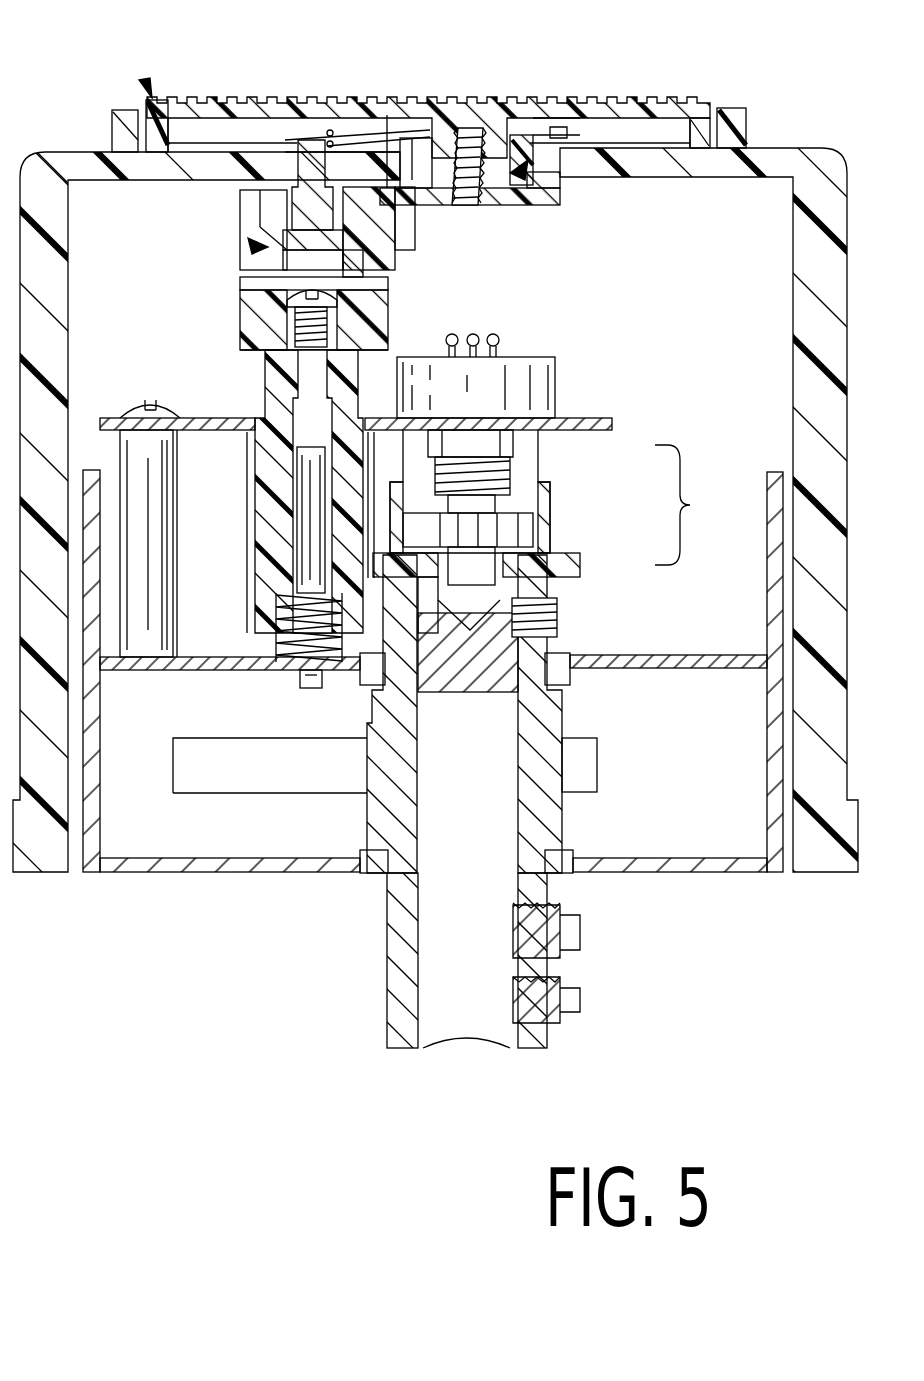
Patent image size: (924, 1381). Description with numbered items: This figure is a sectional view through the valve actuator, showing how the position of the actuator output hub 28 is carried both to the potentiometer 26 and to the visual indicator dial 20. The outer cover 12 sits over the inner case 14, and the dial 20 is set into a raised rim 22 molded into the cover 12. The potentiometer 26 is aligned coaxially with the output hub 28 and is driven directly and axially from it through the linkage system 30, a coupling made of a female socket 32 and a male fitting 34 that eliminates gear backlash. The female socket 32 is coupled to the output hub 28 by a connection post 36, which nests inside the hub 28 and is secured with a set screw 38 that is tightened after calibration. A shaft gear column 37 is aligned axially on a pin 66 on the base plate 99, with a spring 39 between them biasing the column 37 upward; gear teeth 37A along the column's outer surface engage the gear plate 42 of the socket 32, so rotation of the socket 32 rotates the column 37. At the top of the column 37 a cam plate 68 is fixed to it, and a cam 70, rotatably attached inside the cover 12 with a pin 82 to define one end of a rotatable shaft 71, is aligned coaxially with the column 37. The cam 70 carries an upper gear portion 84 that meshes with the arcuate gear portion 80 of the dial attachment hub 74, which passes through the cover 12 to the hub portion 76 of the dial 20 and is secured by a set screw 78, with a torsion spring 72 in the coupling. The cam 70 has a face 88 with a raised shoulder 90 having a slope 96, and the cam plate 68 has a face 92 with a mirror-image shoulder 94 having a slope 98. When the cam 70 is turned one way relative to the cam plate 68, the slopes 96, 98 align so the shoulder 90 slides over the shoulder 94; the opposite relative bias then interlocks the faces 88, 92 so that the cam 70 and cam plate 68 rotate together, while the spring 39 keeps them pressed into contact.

The outer cover 12 is at (808, 382).
The inner case 14 is at (116, 873).
The visual indicator dial 20 is at (147, 88).
The raised rim 22 is at (118, 120).
The potentiometer 26 is at (540, 380).
The actuator output hub 28 is at (540, 740).
The linkage system 30 is at (694, 505).
The female socket 32 is at (532, 473).
The male fitting 34 is at (520, 523).
The connection post 36 is at (510, 648).
The shaft gear column 37 is at (272, 385).
The gear teeth 37A is at (248, 572).
The set screw 38 is at (545, 610).
The spring 39 is at (290, 645).
The gear plate 42 is at (560, 565).
The pin 66 is at (306, 688).
The cam plate 68 is at (240, 300).
The cam 70 is at (262, 240).
The rotatable member or shaft 71 is at (378, 200).
The torsion spring 72 is at (290, 146).
The dial attachment hub 74 is at (522, 176).
The hub portion 76 is at (493, 148).
The set screw 78 is at (482, 205).
The arcuate gear portion 80 is at (422, 198).
The pin 82 is at (320, 135).
The upper gear portion 84 is at (258, 212).
The face 88 is at (280, 268).
The raised shoulder 90 is at (352, 262).
The face 92 is at (385, 320).
The raised shoulder 94 is at (240, 320).
The slope 96 is at (345, 290).
The slope 98 is at (240, 330).
The base plate 99 is at (192, 672).